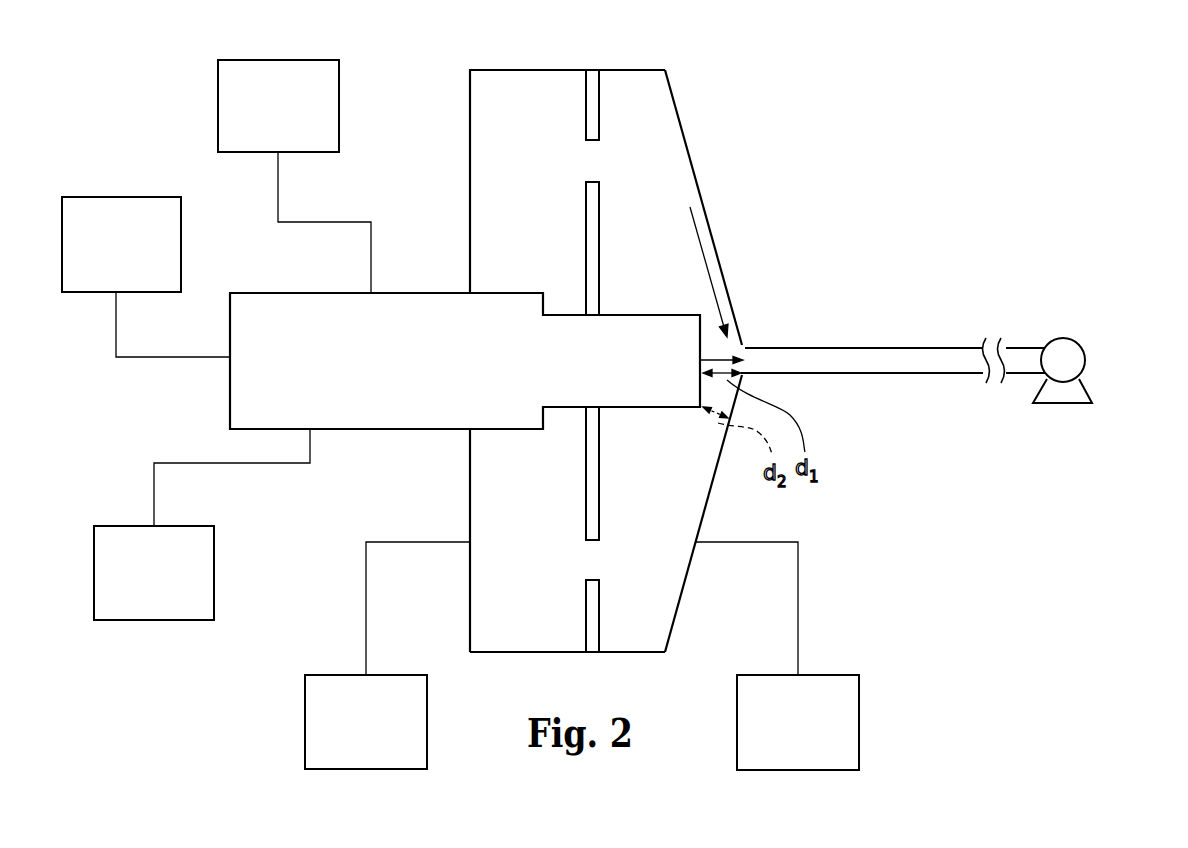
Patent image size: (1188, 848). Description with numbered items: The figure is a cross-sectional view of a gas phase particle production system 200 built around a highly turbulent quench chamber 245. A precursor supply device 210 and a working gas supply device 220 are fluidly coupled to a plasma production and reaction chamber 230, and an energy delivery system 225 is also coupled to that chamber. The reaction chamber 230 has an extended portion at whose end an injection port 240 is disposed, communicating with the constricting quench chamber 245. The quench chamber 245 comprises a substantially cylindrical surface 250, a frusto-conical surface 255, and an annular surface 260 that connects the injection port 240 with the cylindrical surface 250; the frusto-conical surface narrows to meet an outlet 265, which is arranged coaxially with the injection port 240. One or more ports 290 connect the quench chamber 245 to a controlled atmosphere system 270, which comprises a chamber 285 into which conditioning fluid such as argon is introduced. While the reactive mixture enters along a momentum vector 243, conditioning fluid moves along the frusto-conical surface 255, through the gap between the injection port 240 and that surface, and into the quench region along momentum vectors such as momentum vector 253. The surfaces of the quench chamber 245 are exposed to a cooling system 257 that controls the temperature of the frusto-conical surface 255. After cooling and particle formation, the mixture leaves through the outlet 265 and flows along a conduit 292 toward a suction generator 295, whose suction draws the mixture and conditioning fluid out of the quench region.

The gas phase particle production system 200 is at (947, 101).
The precursor supply device 210 is at (299, 116).
The working gas supply device 220 is at (142, 256).
The energy delivery system 225 is at (175, 585).
The plasma production and reaction chamber 230 is at (409, 372).
The injection port 240 is at (690, 407).
The momentum vector 243 is at (727, 352).
The quench chamber 245 is at (645, 523).
The cylindrical surface 250 is at (642, 655).
The momentum vector 253 is at (717, 260).
The frusto-conical surface 255 is at (673, 95).
The cooling system 257 is at (819, 734).
The annular surface 260 is at (585, 512).
The outlet 265 is at (745, 348).
The controlled atmosphere system 270 is at (387, 734).
The chamber 285 is at (547, 502).
The ports 290 is at (592, 157).
The conduit 292 is at (878, 375).
The suction generator 295 is at (1084, 343).